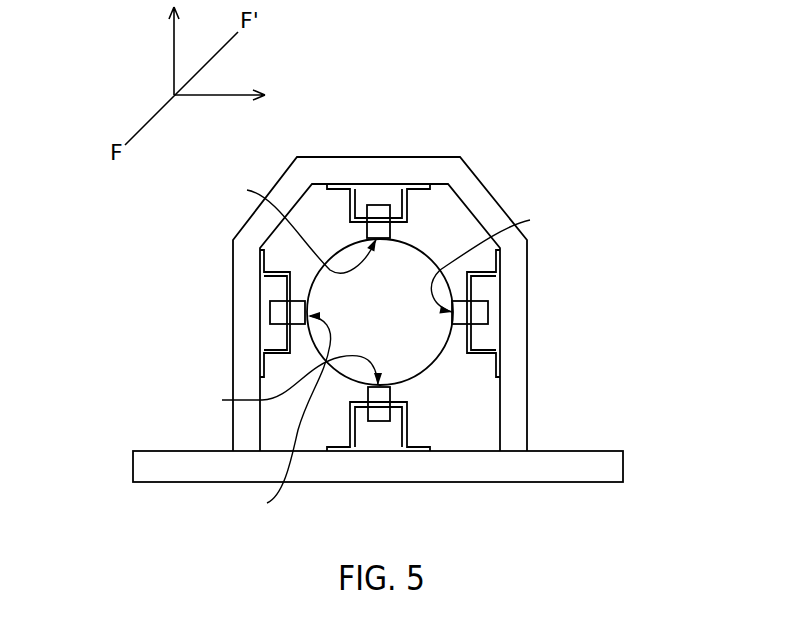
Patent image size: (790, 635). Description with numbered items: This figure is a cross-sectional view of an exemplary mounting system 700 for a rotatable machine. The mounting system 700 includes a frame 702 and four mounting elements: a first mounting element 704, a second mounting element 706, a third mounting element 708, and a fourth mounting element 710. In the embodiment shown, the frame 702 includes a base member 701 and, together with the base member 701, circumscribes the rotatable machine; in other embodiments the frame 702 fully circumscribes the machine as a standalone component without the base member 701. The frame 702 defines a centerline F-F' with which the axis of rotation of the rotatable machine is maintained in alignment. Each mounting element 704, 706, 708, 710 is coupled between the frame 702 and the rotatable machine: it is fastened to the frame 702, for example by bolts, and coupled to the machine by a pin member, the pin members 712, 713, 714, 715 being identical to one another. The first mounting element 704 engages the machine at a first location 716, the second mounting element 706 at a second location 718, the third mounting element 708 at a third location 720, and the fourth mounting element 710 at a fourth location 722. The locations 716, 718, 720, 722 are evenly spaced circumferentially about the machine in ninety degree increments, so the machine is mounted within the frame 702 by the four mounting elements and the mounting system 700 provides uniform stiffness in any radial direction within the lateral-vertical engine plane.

The mounting system 700 is at (541, 80).
The base member 701 is at (593, 482).
The frame 702 is at (546, 262).
The first mounting element 704 is at (430, 184).
The second mounting element 706 is at (488, 360).
The third mounting element 708 is at (420, 451).
The fourth mounting element 710 is at (260, 362).
The pin member 712 is at (408, 205).
The pin member 713 is at (462, 325).
The pin member 714 is at (367, 390).
The pin member 715 is at (308, 306).
The first location 716 is at (293, 225).
The second location 718 is at (392, 233).
The third location 720 is at (281, 414).
The fourth location 722 is at (285, 384).